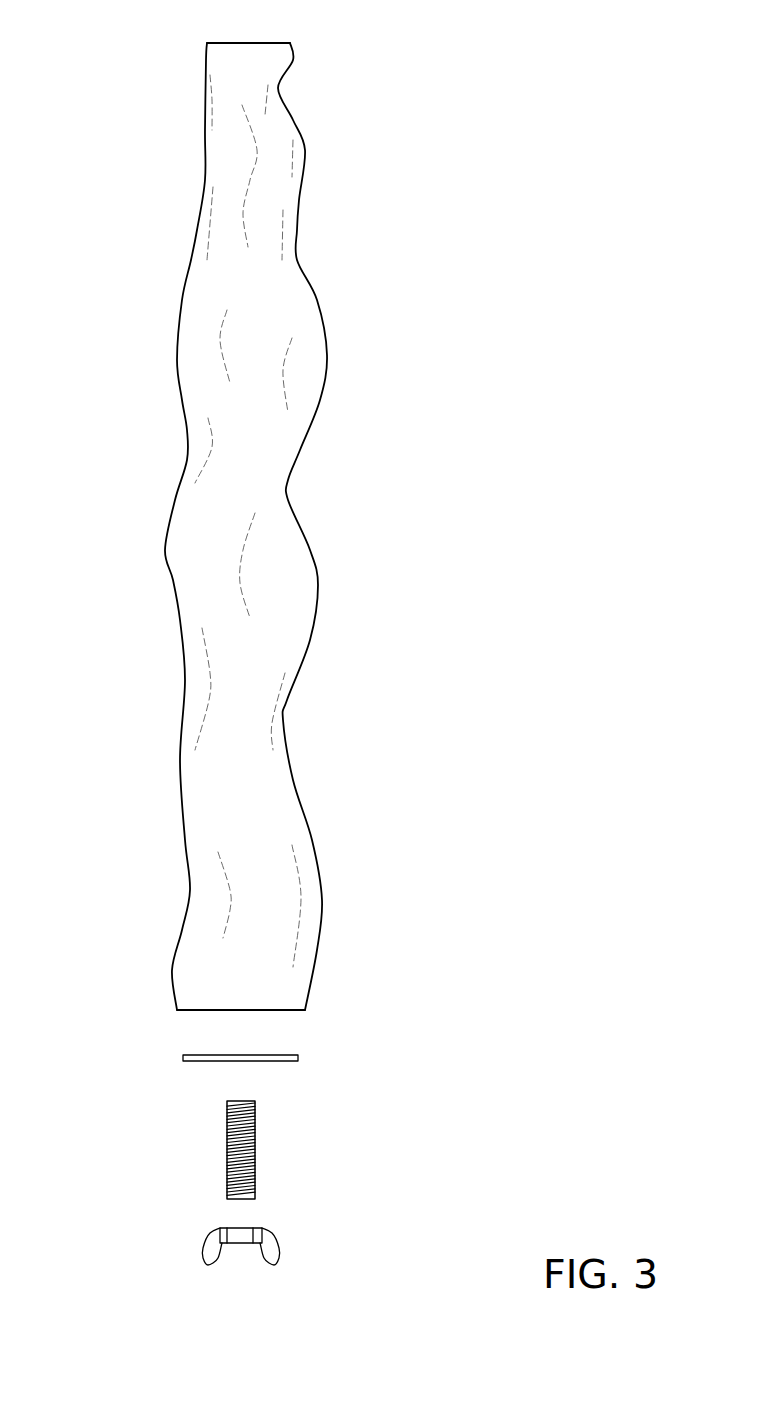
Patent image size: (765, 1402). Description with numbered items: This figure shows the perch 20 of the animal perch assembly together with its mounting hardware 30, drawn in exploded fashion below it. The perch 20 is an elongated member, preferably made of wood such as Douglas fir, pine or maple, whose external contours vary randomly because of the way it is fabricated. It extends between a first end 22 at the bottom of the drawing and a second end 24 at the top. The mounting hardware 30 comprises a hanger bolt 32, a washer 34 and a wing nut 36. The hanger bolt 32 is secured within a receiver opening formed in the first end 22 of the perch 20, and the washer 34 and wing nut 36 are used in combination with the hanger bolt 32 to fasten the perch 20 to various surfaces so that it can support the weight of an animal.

The perch 20 is at (231, 529).
The first end 22 is at (275, 1012).
The second end 24 is at (248, 43).
The mounting hardware 30 is at (226, 1160).
The hanger bolt 32 is at (256, 1163).
The washer 34 is at (280, 1061).
The wing nut 36 is at (280, 1233).